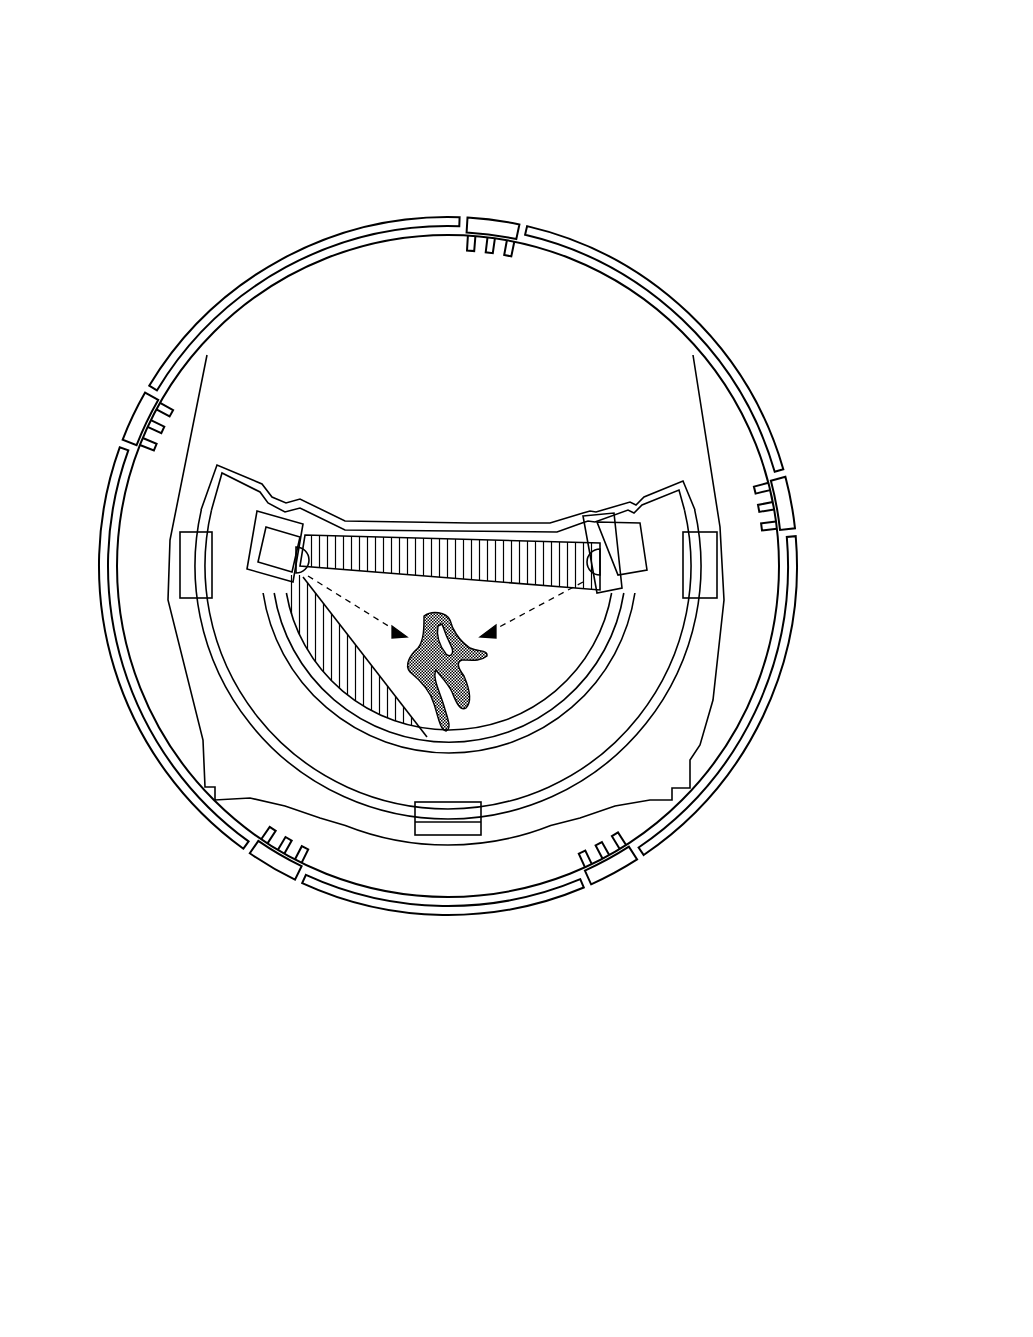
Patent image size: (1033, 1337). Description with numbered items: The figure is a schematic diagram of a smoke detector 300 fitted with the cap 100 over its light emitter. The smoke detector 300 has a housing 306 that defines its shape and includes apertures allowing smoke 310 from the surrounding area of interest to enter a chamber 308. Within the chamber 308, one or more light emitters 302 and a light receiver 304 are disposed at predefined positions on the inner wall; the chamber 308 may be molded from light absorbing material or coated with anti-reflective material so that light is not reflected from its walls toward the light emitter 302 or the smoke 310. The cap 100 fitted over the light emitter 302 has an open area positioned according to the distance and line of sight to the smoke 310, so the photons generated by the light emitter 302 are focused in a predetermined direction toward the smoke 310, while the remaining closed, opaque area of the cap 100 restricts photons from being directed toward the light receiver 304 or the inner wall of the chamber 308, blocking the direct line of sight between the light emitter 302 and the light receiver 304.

The smoke detector 300 is at (122, 62).
The light emitter 302 is at (292, 560).
The light receiver 304 is at (608, 550).
The housing 306 is at (800, 612).
The cap 100 is at (292, 580).
The chamber 308 is at (556, 668).
The smoke 310 is at (478, 688).